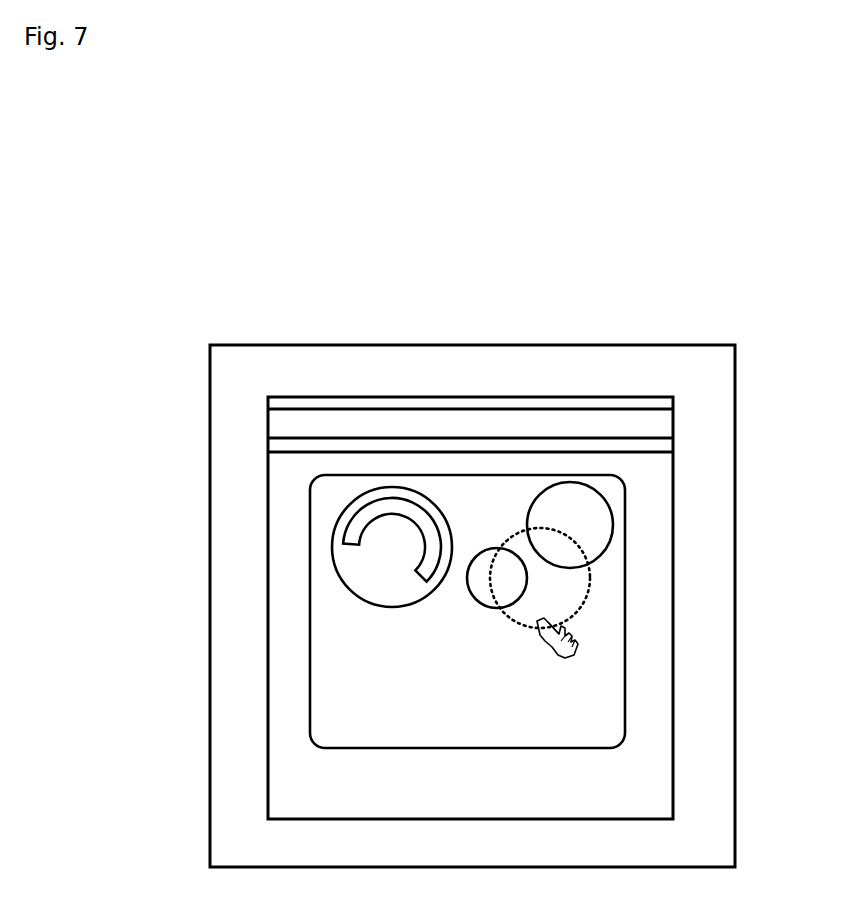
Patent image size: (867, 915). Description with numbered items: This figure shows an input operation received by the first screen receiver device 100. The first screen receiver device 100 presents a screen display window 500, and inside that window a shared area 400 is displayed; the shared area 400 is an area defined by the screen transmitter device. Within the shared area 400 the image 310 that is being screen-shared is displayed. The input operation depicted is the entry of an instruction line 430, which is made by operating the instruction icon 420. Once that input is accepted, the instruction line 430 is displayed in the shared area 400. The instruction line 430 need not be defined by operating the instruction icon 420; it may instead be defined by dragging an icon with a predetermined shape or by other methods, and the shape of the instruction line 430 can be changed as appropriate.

The first screen receiver device 100 is at (722, 370).
The screen display window 500 is at (657, 506).
The shared area 400 is at (627, 583).
The image 310 is at (590, 522).
The instruction line 430 is at (590, 572).
The instruction icon 420 is at (570, 657).